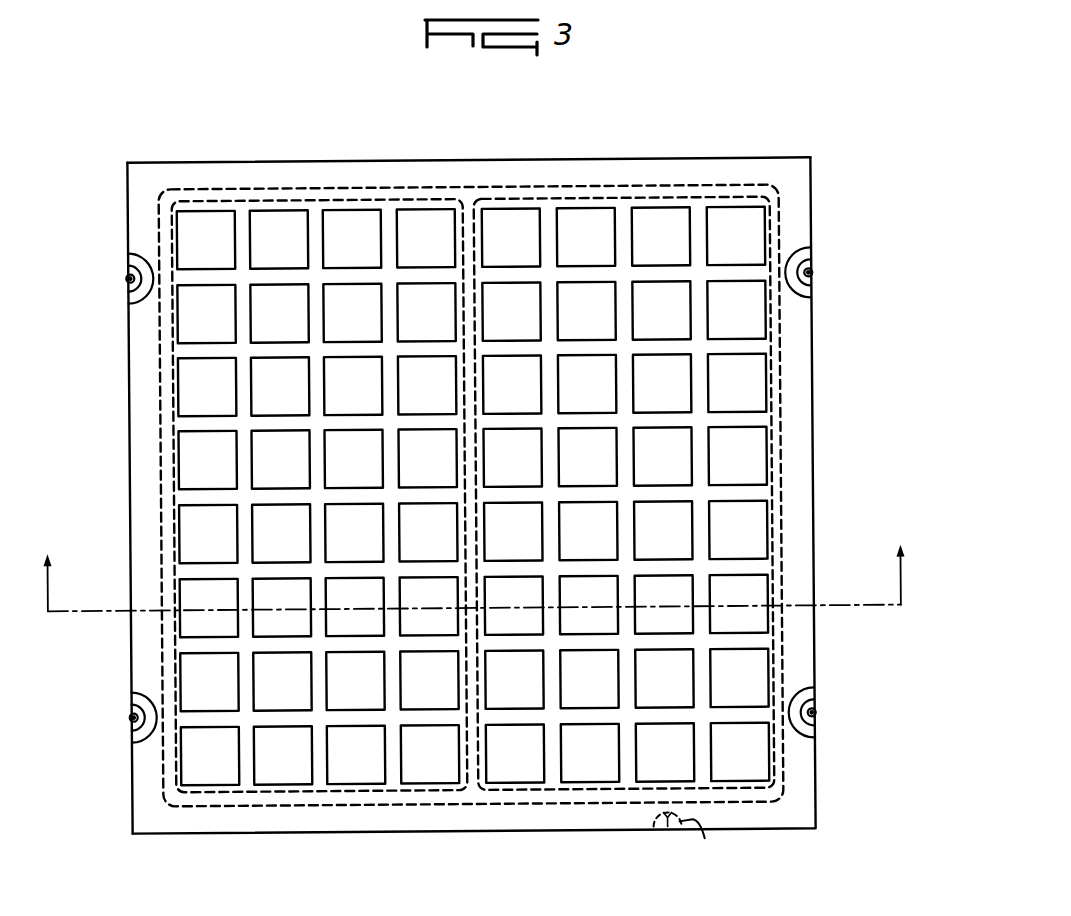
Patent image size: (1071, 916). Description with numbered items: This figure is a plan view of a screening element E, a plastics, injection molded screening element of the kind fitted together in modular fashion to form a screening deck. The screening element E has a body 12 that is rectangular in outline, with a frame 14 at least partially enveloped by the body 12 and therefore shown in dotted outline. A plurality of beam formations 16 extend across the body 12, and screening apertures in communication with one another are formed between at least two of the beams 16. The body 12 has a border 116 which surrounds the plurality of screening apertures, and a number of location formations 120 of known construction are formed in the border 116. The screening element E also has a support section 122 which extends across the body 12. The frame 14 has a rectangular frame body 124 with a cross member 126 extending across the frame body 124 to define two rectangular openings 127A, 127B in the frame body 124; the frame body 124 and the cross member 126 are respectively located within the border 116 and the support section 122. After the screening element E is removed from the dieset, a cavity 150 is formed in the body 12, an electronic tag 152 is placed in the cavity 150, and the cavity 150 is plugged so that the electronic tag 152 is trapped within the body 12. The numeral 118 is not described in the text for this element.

The screening element E is at (757, 137).
The body 12 is at (800, 398).
The frame 14 is at (779, 458).
The beam formations 16 is at (143, 331).
The border 116 is at (607, 166).
The cell opening 118 is at (421, 229).
The location formations 120 is at (813, 277).
The support section 122 is at (486, 762).
The frame body 124 is at (281, 799).
The cross member 126 is at (467, 747).
The rectangular opening 127A is at (290, 692).
The rectangular opening 127B is at (662, 690).
The cavity 150 is at (702, 840).
The electronic tag 152 is at (666, 828).